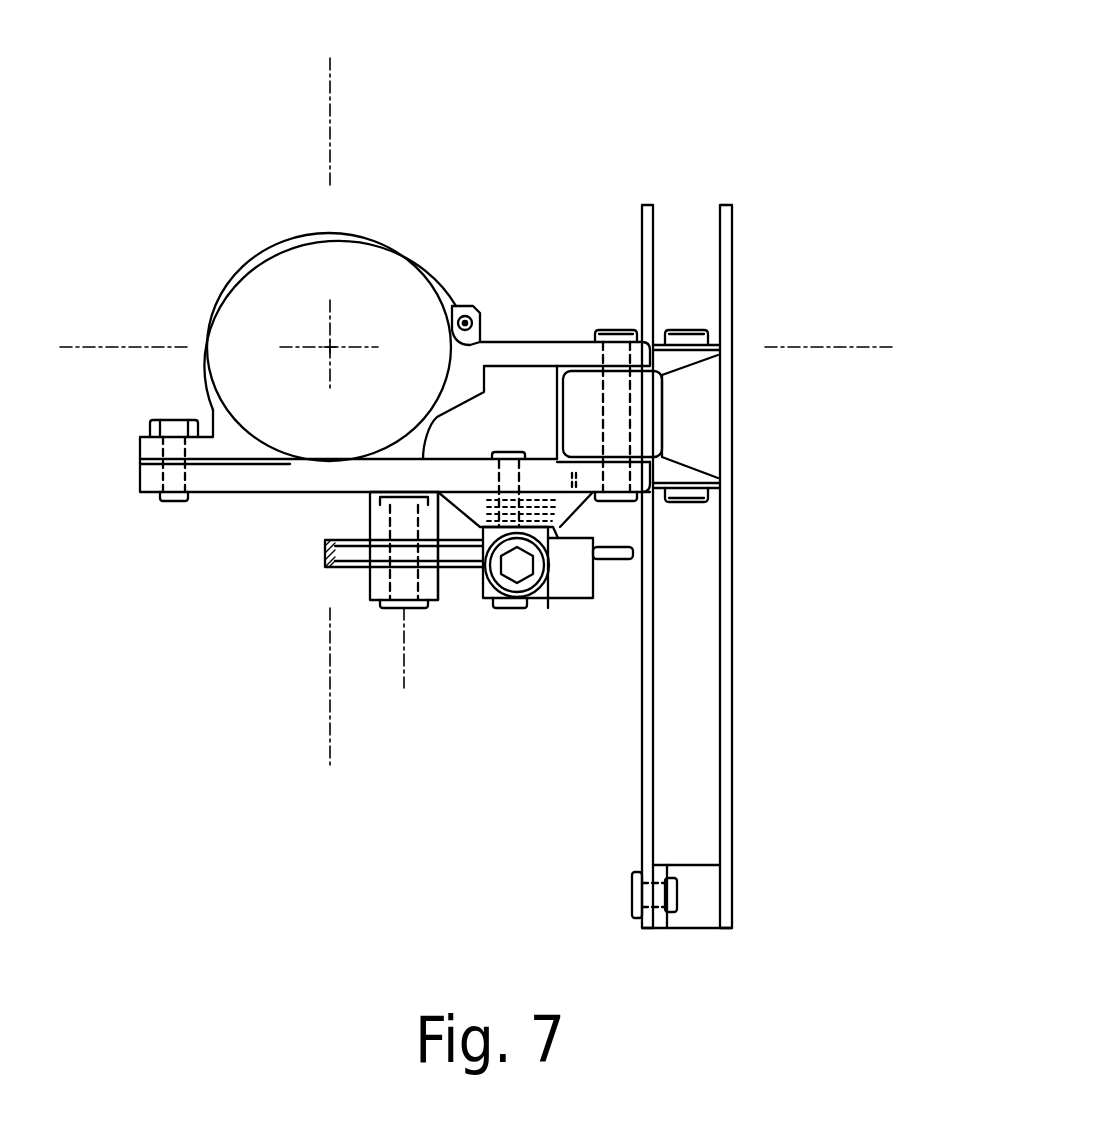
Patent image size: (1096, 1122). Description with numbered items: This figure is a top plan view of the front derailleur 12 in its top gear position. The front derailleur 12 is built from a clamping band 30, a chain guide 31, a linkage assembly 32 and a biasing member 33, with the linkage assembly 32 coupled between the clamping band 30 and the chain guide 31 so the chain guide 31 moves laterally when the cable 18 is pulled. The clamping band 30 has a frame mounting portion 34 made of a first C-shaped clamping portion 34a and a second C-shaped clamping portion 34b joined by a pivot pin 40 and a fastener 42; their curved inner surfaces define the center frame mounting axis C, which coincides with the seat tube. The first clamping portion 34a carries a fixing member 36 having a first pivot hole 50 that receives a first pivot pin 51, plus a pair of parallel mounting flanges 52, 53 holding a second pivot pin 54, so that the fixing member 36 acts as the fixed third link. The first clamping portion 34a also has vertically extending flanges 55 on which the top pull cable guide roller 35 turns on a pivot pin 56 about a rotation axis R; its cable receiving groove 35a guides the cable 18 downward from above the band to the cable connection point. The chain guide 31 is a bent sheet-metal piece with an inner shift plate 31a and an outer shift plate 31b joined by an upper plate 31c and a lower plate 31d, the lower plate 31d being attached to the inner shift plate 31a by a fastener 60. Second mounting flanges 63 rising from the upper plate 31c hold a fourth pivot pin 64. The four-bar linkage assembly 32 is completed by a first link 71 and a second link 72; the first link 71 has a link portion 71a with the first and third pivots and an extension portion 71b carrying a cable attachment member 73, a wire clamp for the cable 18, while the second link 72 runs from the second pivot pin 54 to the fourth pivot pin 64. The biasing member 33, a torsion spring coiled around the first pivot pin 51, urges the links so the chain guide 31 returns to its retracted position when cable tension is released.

The front derailleur 12 is at (668, 167).
The cable 18 is at (317, 553).
The clamping band 30 is at (242, 503).
The chain guide 31 is at (733, 690).
The inner shift plate 31a is at (660, 768).
The outer shift plate 31b is at (733, 640).
The upper plate 31c is at (722, 402).
The lower plate 31d is at (690, 908).
The linkage assembly 32 is at (560, 277).
The biasing member 33 is at (593, 506).
The frame mounting portion 34 is at (207, 298).
The first C-shaped clamping portion 34a is at (443, 397).
The second C-shaped clamping portion 34b is at (350, 222).
The top pull cable guide roller 35 is at (347, 608).
The cable receiving groove 35a is at (455, 578).
The fixing member 36 is at (548, 340).
The pivot pin 40 is at (465, 315).
The fastener 42 is at (168, 420).
The first pivot hole 50 is at (500, 478).
The first pivot pin 51 is at (510, 610).
The mounting flange 52 is at (537, 470).
The mounting flange 53 is at (565, 343).
The second pivot pin 54 is at (616, 328).
The vertically extending flanges 55 is at (372, 530).
The pivot pin 56 is at (425, 608).
The fastener 60 is at (632, 893).
The second mounting flanges 63 is at (708, 332).
The fourth pivot pin 64 is at (682, 330).
The first link 71 is at (578, 605).
The link portion 71a is at (590, 583).
The extension portion 71b is at (543, 607).
The second link 72 is at (690, 428).
The cable attachment member 73 is at (580, 585).
The center frame mounting axis C is at (330, 347).
The rotation axis R is at (403, 667).